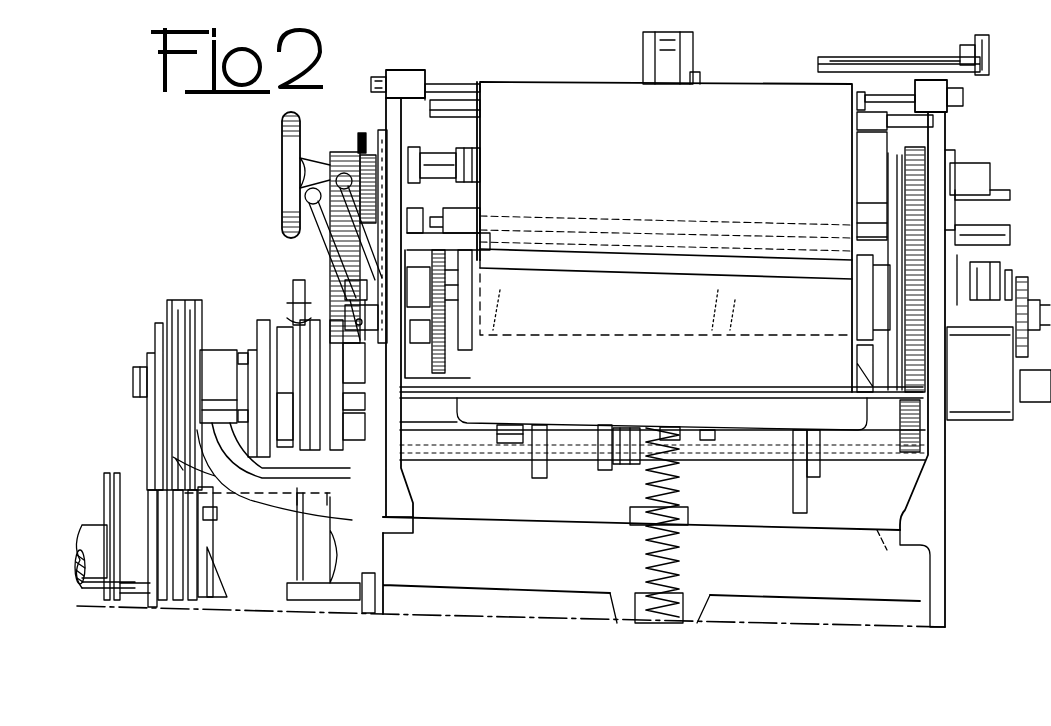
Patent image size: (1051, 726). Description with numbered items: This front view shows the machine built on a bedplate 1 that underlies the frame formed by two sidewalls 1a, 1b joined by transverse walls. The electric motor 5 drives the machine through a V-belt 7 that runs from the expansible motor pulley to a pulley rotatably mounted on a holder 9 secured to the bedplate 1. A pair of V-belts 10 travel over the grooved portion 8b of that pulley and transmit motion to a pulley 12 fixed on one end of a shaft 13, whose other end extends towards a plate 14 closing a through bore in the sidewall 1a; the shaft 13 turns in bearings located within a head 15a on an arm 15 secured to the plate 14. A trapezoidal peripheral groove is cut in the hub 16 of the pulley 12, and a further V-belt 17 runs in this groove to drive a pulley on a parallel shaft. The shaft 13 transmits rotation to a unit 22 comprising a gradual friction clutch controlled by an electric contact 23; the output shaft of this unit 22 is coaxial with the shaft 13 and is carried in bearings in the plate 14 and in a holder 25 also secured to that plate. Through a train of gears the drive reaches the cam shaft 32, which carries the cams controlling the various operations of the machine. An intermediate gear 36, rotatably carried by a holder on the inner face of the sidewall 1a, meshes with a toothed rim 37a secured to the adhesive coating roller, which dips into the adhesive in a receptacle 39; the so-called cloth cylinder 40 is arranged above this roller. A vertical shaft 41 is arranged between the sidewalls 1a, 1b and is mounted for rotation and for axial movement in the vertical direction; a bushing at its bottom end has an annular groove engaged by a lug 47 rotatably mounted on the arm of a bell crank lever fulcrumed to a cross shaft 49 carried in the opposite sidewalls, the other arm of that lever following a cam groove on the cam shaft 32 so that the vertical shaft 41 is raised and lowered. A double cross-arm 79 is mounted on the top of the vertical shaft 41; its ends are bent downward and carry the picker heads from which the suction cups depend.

The bedplate 1 is at (933, 587).
The sidewall 1a is at (393, 103).
The sidewall 1b is at (933, 490).
The electric motor 5 is at (328, 528).
The V-belt 7 is at (132, 512).
The grooved portion 8b is at (207, 587).
The holder 9 is at (343, 592).
The V-belts 10 is at (193, 467).
The pulley 12 is at (330, 255).
The shaft 13 is at (133, 375).
The plate 14 is at (373, 435).
The arm 15 is at (330, 497).
The head 15a is at (223, 360).
The hub 16 is at (142, 405).
The V-belt 17 is at (148, 437).
The unit 22 is at (273, 460).
The electric contact 23 is at (295, 290).
The holder 25 is at (357, 392).
The shaft 32 is at (643, 265).
The intermediate gear 36 is at (518, 328).
The toothed rim 37a is at (438, 250).
The receptacle 39 is at (785, 380).
The cloth cylinder 40 is at (753, 82).
The vertical shaft 41 is at (690, 83).
The lug 47 is at (387, 268).
The cross shaft 49 is at (373, 327).
The double cross-arm 79 is at (648, 57).